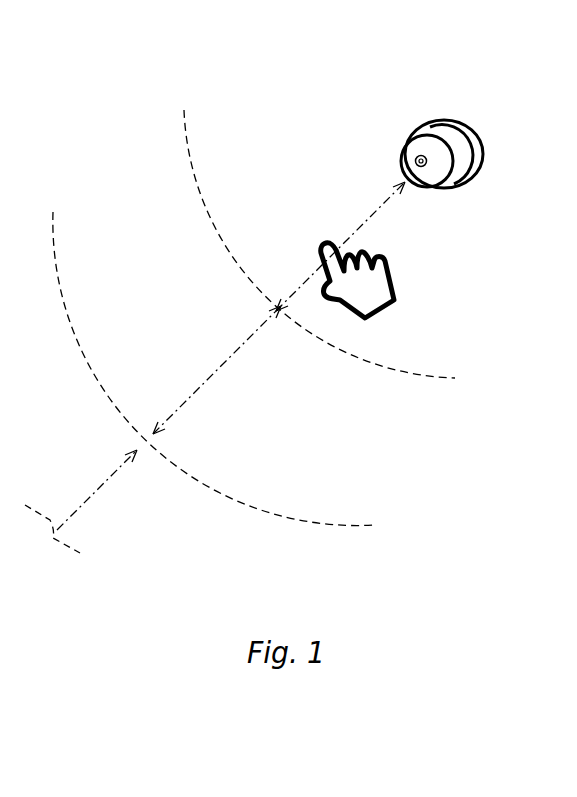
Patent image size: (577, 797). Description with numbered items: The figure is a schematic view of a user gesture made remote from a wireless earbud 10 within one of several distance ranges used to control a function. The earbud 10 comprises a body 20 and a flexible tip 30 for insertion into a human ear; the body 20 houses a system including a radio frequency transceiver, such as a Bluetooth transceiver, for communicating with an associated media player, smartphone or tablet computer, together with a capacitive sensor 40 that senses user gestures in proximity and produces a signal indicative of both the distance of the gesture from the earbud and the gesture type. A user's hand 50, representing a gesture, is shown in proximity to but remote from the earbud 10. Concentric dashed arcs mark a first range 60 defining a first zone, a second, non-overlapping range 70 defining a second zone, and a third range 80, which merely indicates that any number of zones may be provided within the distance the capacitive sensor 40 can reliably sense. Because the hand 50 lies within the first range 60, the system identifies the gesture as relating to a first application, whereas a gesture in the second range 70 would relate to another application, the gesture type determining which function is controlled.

The wireless earbud 10 is at (455, 142).
The body 20 is at (398, 148).
The flexible tip 30 is at (437, 123).
The capacitive sensor 40 is at (426, 165).
The user's hand 50 is at (395, 297).
The first range 60 is at (367, 221).
The second range 70 is at (191, 402).
The third range 80 is at (97, 487).